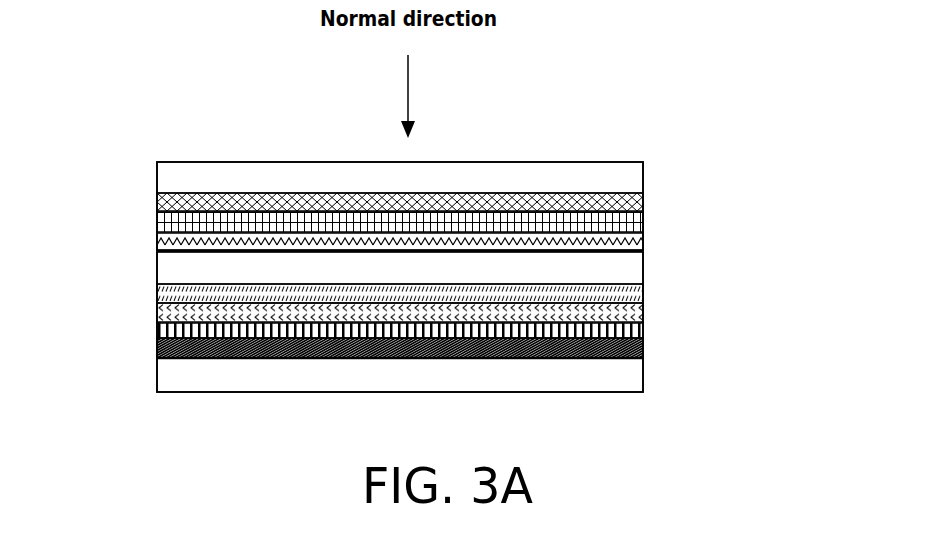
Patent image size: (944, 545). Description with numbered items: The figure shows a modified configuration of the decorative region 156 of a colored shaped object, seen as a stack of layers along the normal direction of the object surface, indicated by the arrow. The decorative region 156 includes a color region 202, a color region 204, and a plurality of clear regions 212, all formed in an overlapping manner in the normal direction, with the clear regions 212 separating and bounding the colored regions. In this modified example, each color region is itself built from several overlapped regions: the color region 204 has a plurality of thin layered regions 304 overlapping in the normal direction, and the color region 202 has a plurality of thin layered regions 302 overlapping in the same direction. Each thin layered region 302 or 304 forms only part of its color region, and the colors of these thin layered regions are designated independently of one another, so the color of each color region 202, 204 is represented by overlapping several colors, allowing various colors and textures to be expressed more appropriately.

The decorative region 156 is at (115, 101).
The clear region 212 is at (170, 177).
The thin layered region 304 is at (643, 200).
The color region 204 is at (808, 140).
The thin layered region 302 is at (643, 293).
The color region 202 is at (808, 262).